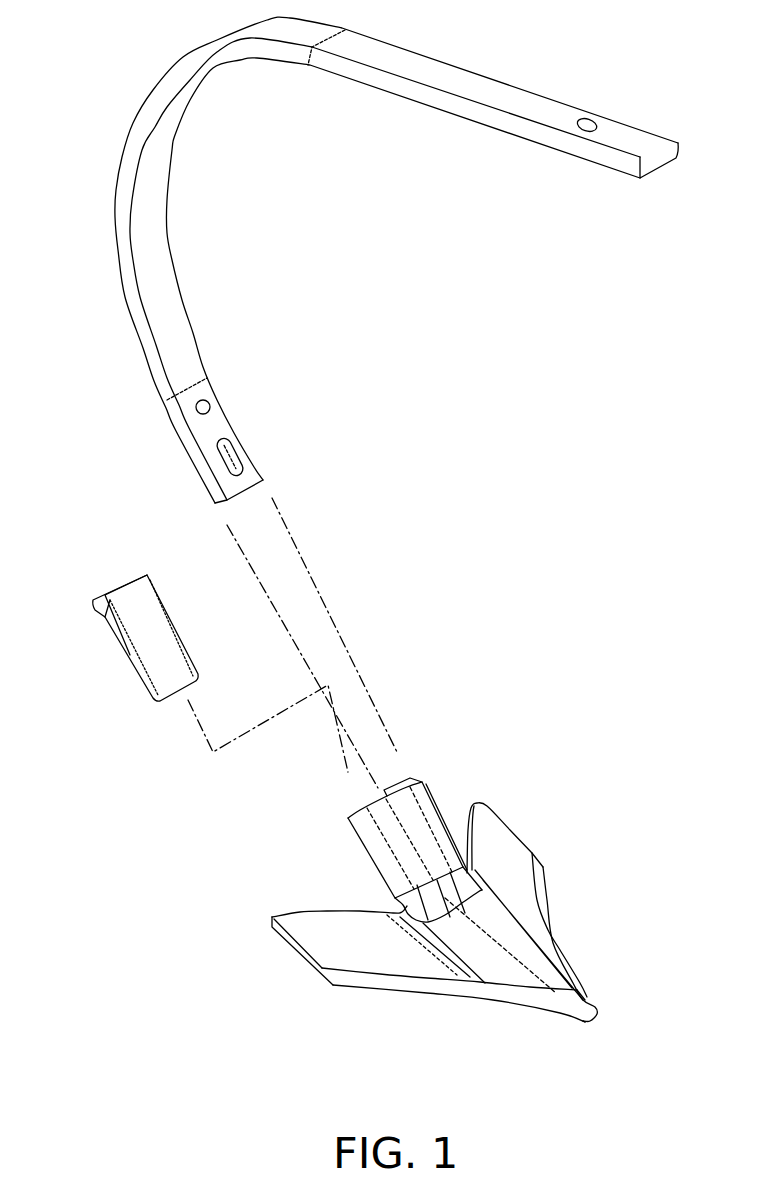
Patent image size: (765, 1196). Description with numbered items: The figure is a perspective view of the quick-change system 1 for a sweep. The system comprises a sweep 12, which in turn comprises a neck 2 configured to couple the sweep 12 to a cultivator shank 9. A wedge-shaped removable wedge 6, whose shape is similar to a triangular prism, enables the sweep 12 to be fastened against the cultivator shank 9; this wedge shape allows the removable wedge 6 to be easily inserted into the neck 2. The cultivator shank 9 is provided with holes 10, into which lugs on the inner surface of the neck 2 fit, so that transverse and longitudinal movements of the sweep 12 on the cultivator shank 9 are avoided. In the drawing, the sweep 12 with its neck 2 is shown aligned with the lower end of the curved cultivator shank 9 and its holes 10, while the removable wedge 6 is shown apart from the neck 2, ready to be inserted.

The quick-change system 1 is at (525, 733).
The neck 2 is at (425, 815).
The removable wedge 6 is at (130, 655).
The cultivator shank 9 is at (172, 322).
The holes 10 is at (230, 462).
The sweep 12 is at (532, 938).